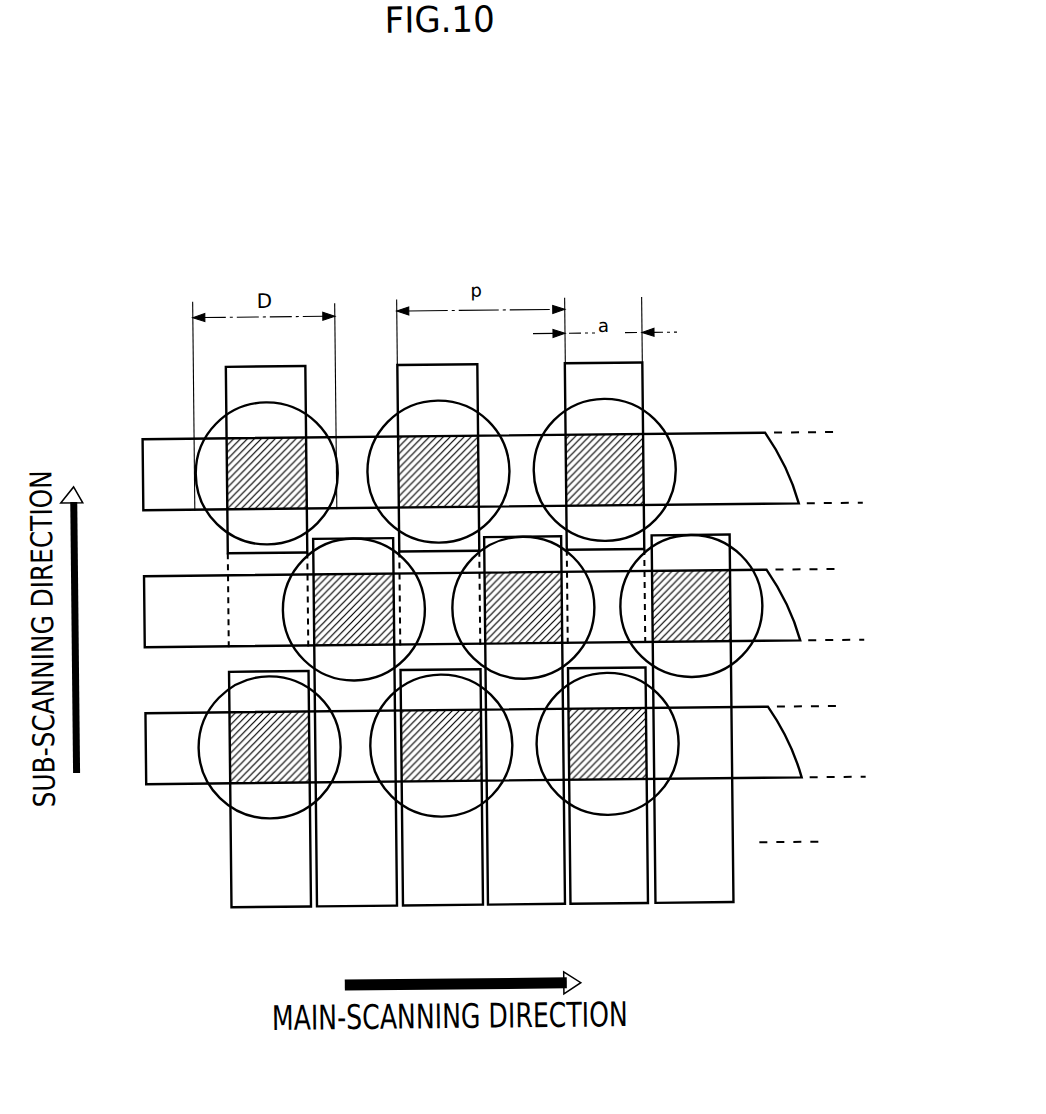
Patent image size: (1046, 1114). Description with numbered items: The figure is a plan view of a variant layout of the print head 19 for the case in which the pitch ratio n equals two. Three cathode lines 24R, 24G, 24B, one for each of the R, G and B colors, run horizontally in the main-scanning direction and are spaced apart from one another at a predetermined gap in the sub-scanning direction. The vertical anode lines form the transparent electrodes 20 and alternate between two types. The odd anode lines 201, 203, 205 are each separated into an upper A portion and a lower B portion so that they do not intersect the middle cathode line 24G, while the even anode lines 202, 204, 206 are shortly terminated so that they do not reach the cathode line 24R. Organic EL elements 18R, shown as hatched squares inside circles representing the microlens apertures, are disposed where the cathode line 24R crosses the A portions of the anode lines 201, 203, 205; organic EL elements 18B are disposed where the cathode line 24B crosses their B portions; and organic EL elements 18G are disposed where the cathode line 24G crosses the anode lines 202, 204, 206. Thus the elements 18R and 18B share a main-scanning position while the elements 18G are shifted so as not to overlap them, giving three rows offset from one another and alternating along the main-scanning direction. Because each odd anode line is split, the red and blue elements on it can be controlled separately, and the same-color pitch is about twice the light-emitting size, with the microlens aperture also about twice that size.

The print head 19 is at (742, 238).
The transparent electrodes 20 is at (543, 615).
The anode line 201 is at (294, 371).
The anode line 202 is at (365, 894).
The anode line 203 is at (462, 377).
The anode line 204 is at (522, 896).
The anode line 205 is at (634, 382).
The anode line 206 is at (705, 897).
The organic EL elements 18R is at (289, 443).
The organic EL elements 18G is at (766, 676).
The organic EL elements 18B is at (615, 780).
The cathode line 24R is at (164, 449).
The cathode line 24G is at (165, 582).
The cathode line 24B is at (166, 717).